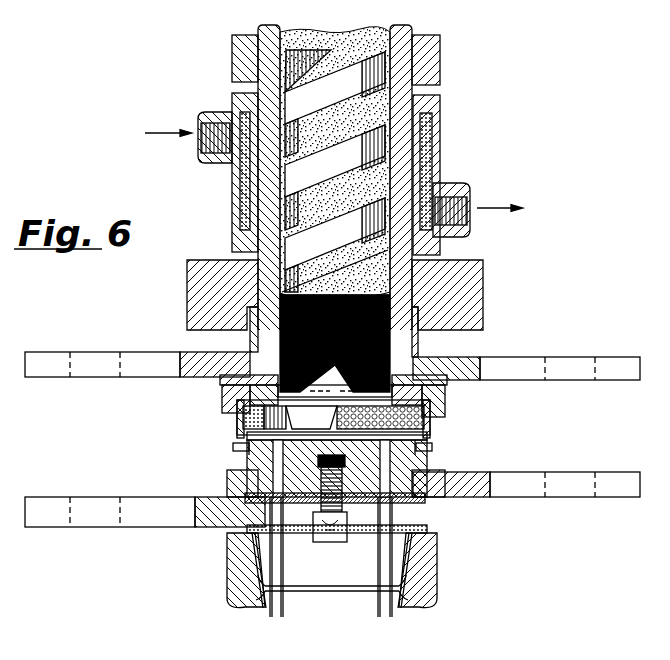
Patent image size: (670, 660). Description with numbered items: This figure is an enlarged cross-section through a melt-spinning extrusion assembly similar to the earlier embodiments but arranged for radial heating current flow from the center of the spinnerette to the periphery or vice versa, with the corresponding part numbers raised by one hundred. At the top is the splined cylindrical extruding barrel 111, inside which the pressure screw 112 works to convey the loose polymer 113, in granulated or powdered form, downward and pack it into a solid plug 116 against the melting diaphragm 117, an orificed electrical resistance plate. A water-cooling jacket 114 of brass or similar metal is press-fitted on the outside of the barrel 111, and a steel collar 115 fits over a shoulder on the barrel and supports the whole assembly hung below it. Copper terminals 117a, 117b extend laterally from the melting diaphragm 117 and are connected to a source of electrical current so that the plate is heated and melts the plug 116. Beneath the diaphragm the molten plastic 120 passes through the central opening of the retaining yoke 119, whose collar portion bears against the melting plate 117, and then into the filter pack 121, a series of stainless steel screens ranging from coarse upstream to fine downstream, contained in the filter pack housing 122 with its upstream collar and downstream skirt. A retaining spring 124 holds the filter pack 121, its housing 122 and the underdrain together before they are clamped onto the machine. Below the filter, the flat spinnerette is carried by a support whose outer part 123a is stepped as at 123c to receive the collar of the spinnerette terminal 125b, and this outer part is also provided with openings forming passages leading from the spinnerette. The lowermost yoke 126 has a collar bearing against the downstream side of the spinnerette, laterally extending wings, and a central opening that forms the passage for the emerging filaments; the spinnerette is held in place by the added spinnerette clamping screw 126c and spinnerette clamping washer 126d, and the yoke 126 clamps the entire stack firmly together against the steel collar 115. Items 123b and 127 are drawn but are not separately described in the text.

The extruding barrel 111 is at (268, 33).
The pressure screw 112 is at (373, 82).
The loose polymer 113 is at (382, 113).
The water-cooling jacket 114 is at (232, 181).
The steel collar 115 is at (187, 266).
The solid plug 116 is at (290, 335).
The melting diaphragm 117 is at (420, 395).
The copper terminal 117a is at (43, 364).
The copper terminal 117b is at (604, 367).
The retaining yoke 119 is at (224, 394).
The molten plastic 120 is at (215, 352).
The filter pack 121 is at (241, 420).
The filter pack housing 122 is at (236, 444).
The outer part 123a is at (426, 470).
The spacer block 123b is at (228, 481).
The step 123c is at (425, 500).
The retaining spring 124 is at (258, 458).
The spinnerette terminal 125b is at (37, 513).
The yoke 126 is at (438, 547).
The spinnerette clamping screw 126c is at (285, 591).
The spinnerette clamping washer 126d is at (362, 514).
The tube 127 is at (282, 606).